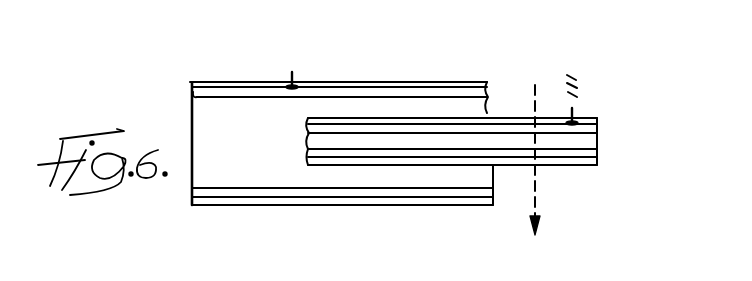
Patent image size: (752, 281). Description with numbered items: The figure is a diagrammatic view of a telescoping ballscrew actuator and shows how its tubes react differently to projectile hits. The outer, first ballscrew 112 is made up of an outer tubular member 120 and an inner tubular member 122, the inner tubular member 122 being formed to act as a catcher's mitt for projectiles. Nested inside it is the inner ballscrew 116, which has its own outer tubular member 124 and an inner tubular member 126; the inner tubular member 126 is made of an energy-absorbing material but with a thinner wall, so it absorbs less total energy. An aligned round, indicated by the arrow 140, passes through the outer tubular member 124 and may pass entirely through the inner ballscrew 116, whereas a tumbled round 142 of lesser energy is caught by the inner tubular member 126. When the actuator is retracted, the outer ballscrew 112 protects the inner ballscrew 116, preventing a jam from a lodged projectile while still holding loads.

The first ballscrew 112 is at (455, 80).
The inner ballscrew 116 is at (591, 112).
The outer tubular member 120 is at (320, 121).
The inner tubular member 122 is at (159, 144).
The outer tubular member 124 is at (567, 166).
The inner tubular member 126 is at (486, 138).
The arrow 140 is at (532, 192).
The tumbled round 142 is at (577, 107).